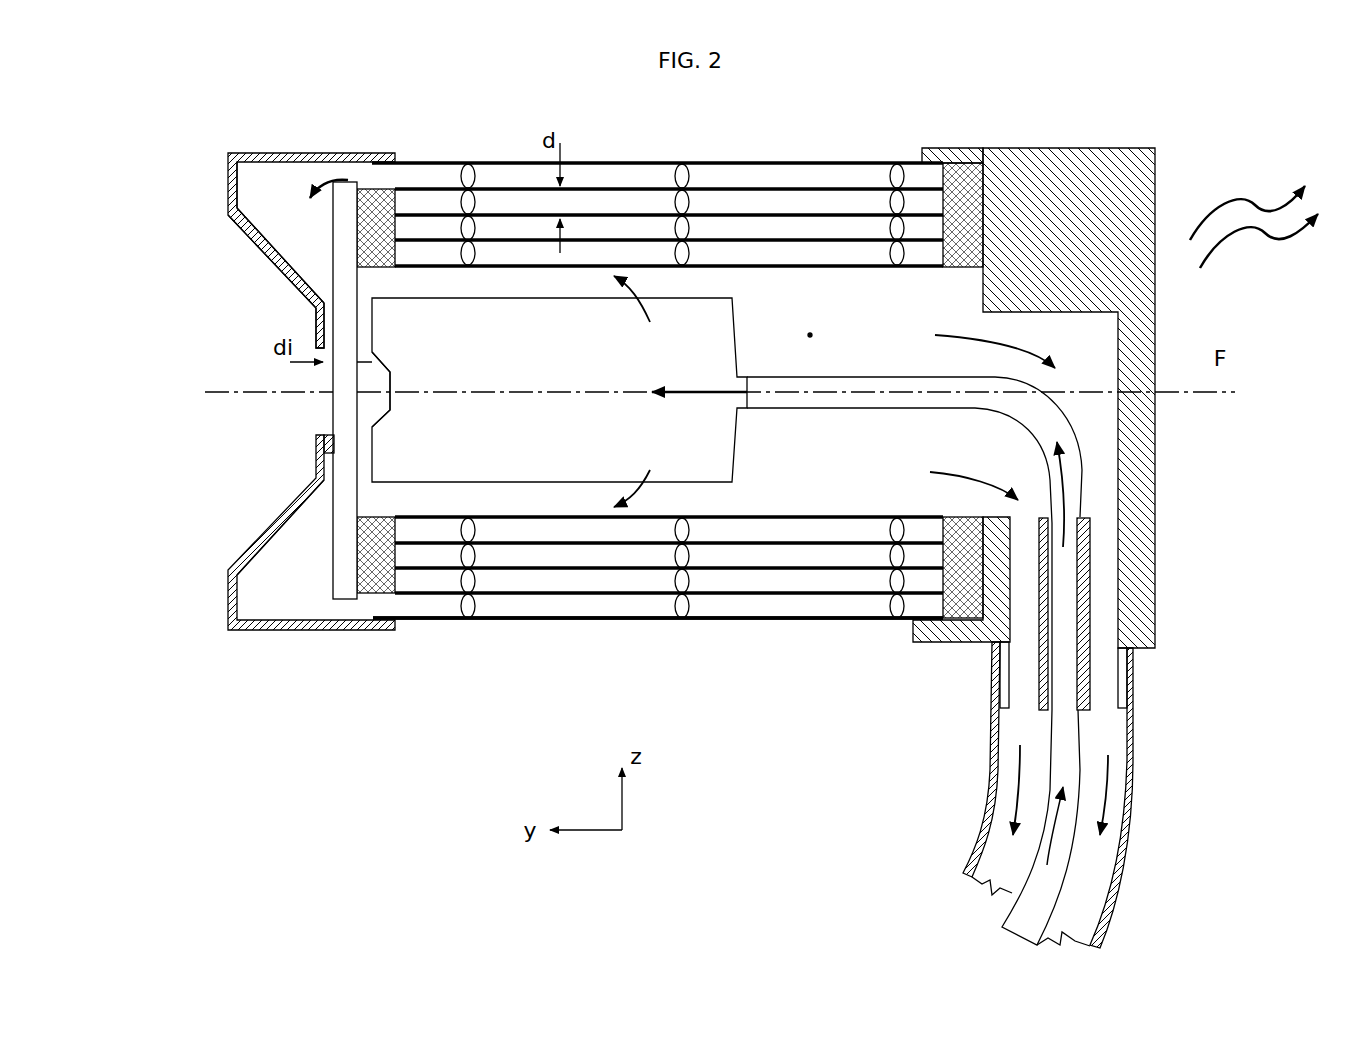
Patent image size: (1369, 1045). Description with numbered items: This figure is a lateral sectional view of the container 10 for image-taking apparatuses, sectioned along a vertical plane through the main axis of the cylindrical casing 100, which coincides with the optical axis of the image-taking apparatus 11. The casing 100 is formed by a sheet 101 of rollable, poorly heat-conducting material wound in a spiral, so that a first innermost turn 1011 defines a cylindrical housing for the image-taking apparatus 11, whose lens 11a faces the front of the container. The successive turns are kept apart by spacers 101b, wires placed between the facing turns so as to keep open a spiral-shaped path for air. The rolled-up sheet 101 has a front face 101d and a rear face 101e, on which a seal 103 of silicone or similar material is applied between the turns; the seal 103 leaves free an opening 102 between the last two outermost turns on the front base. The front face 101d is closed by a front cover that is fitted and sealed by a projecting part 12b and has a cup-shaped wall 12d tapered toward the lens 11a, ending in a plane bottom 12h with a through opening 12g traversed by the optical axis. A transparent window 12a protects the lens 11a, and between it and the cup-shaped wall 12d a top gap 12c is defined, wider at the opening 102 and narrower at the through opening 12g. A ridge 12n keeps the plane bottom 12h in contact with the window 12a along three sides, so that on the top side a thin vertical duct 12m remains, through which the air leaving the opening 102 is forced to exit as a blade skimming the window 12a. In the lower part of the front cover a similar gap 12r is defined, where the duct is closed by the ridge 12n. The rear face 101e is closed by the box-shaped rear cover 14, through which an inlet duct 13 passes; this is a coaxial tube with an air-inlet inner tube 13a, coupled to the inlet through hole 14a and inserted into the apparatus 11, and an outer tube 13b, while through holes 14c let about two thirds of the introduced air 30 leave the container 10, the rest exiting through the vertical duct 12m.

The container 10 is at (1165, 128).
The casing 100 is at (1160, 187).
The rear cover 14 is at (1073, 175).
The rear face 101e is at (945, 160).
The sheet 101 is at (850, 160).
The spacers 101b is at (468, 614).
The front face 101d is at (393, 597).
The first innermost turn 1011 is at (819, 322).
The seal 103 is at (397, 188).
The opening 102 is at (345, 180).
The vertical duct 12m is at (328, 316).
The projecting part 12b is at (268, 153).
The top gap 12c is at (264, 200).
The cup-shaped wall 12d is at (252, 240).
The plane bottom 12h is at (318, 337).
The through opening 12g is at (326, 382).
The gap 12r is at (255, 597).
The ridge 12n is at (330, 436).
The transparent window 12a is at (334, 574).
The image-taking apparatus 11 is at (738, 472).
The lens 11a is at (392, 418).
The inlet through hole 14a is at (1080, 600).
The through holes 14c is at (1130, 665).
The inlet duct 13 is at (1137, 782).
The outer tube 13b is at (998, 852).
The air-inlet inner tube 13a is at (1047, 878).
The air 30 is at (1017, 827).